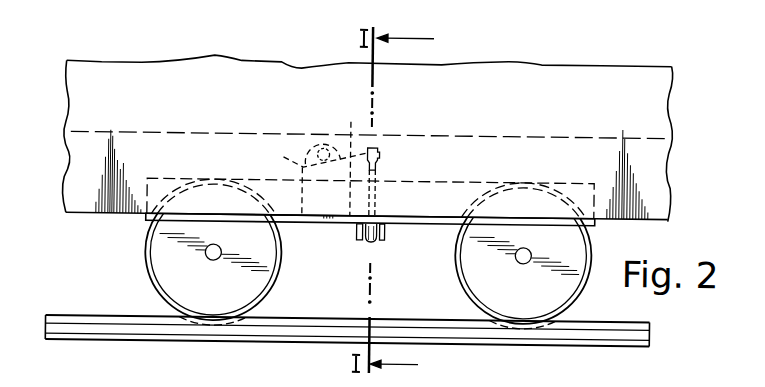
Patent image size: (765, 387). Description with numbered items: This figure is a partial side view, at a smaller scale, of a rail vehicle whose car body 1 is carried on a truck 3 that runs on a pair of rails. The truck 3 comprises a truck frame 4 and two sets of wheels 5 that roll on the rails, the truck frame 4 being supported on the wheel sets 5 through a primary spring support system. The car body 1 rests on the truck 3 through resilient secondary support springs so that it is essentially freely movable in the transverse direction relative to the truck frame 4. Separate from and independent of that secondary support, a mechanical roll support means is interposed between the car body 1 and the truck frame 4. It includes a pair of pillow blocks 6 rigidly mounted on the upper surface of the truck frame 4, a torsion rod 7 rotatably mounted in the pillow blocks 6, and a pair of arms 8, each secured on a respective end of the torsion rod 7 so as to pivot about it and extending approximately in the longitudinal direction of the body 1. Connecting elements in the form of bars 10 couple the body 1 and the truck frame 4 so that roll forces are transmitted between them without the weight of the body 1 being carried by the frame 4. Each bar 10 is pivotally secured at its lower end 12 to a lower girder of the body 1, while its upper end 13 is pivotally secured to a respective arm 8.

The car body 1 is at (527, 82).
The truck 3 is at (311, 230).
The truck frame 4 is at (442, 226).
The wheel sets 5 is at (288, 278).
The pillow blocks 6 is at (290, 161).
The torsion rod 7 is at (321, 147).
The arms 8 is at (355, 149).
The connecting elements 10 is at (377, 198).
The lower end 12 is at (373, 246).
The upper end 13 is at (382, 149).